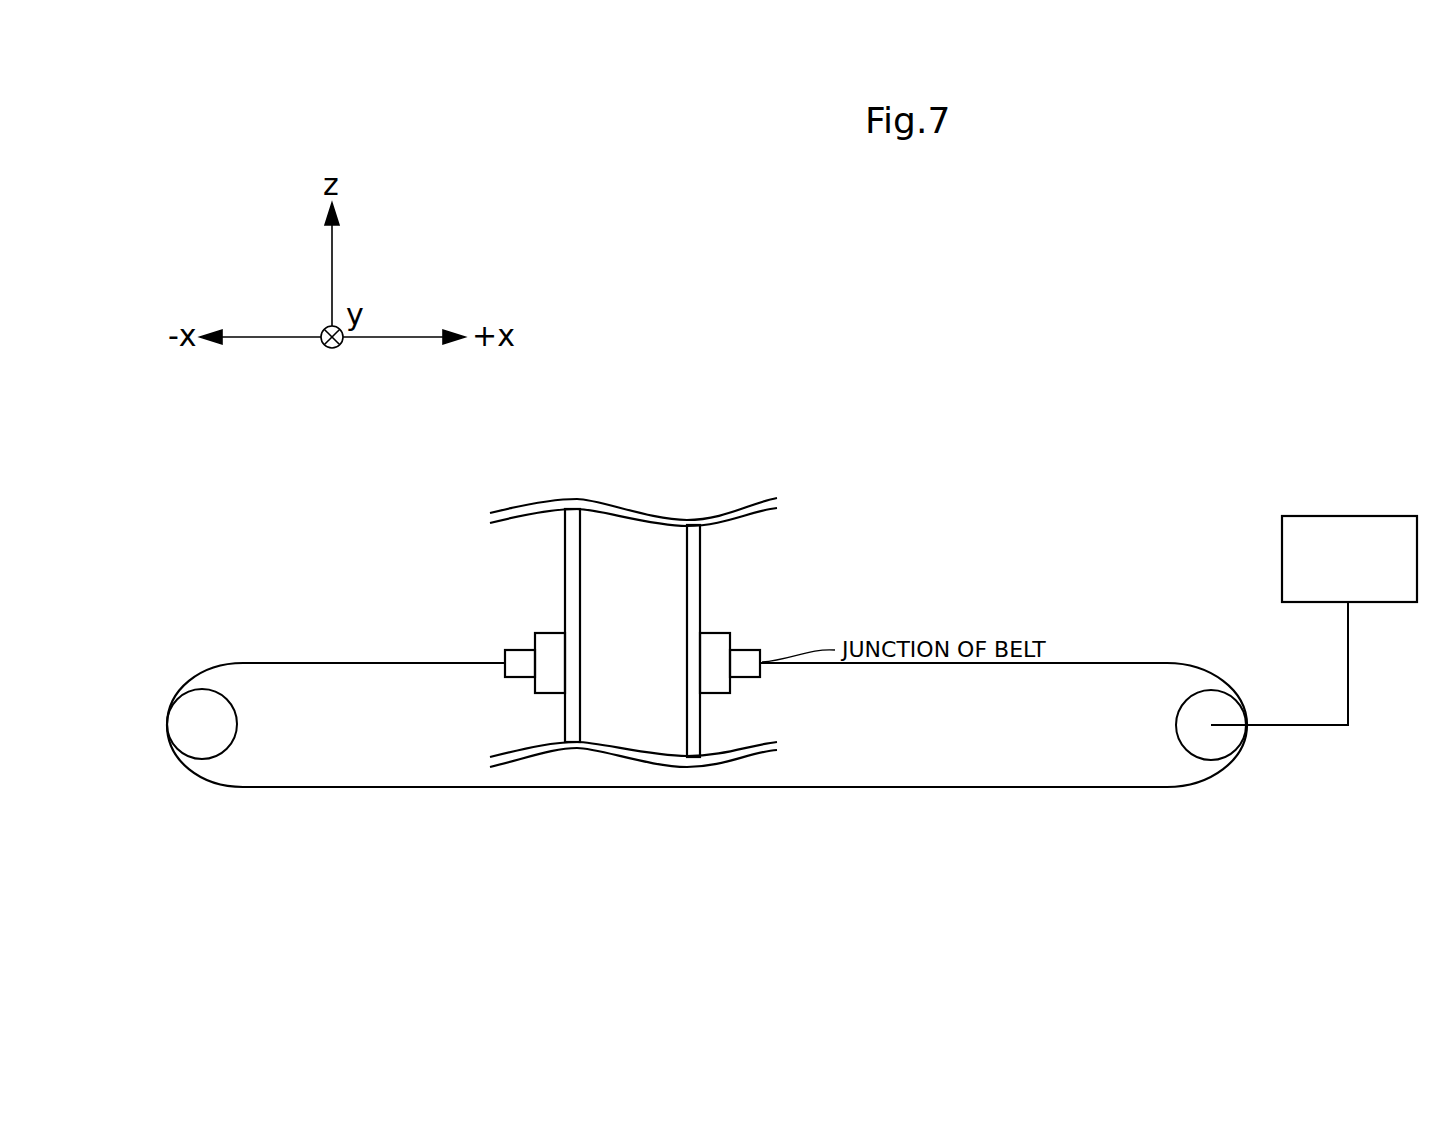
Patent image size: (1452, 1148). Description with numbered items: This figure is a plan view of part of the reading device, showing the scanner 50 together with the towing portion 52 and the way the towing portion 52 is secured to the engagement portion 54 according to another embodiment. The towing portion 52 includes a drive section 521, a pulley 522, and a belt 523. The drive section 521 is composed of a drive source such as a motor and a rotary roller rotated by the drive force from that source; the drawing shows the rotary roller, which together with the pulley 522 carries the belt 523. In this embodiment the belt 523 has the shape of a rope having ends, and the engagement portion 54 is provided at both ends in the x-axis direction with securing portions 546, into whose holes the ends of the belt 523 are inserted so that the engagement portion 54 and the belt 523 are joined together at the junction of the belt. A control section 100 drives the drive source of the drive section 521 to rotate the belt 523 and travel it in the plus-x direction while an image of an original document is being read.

The scanner 50 is at (664, 579).
The towing portion 52 is at (1123, 652).
The engagement portion 54 is at (712, 624).
The securing portions 546 is at (513, 648).
The control section 100 is at (1375, 516).
The drive section 521 is at (1185, 770).
The pulley 522 is at (228, 770).
The belt 523 is at (805, 787).